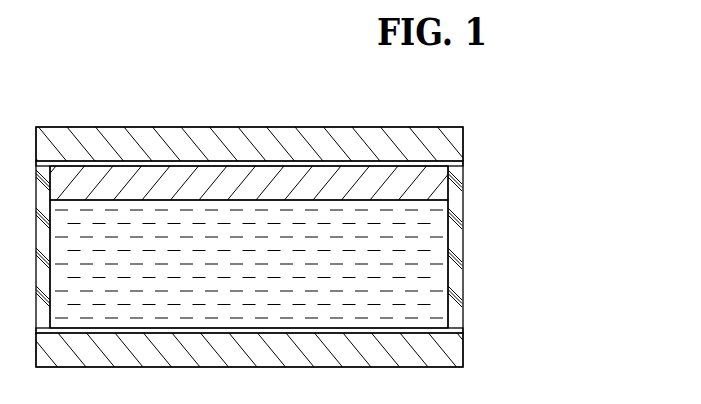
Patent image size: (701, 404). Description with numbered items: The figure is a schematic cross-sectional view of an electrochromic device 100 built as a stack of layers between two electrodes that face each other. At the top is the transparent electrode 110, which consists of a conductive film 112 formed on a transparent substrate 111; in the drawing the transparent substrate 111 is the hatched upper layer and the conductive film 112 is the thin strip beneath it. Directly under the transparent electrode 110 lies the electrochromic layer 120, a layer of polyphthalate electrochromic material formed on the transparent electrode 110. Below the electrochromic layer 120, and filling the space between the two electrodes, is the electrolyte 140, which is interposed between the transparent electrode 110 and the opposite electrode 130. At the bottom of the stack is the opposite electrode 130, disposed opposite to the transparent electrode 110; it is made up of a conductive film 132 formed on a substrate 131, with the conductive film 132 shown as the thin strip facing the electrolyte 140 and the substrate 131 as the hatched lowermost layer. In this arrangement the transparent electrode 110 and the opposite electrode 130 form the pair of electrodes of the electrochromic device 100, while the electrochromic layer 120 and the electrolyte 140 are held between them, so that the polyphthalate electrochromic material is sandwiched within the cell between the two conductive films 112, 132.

The electrochromic device 100 is at (121, 101).
The transparent electrode 110 is at (301, 150).
The transparent substrate 111 is at (463, 135).
The conductive film 112 is at (463, 163).
The electrochromic layer 120 is at (453, 178).
The opposite electrode 130 is at (312, 341).
The substrate 131 is at (463, 332).
The conductive film 132 is at (463, 353).
The electrolyte 140 is at (431, 285).